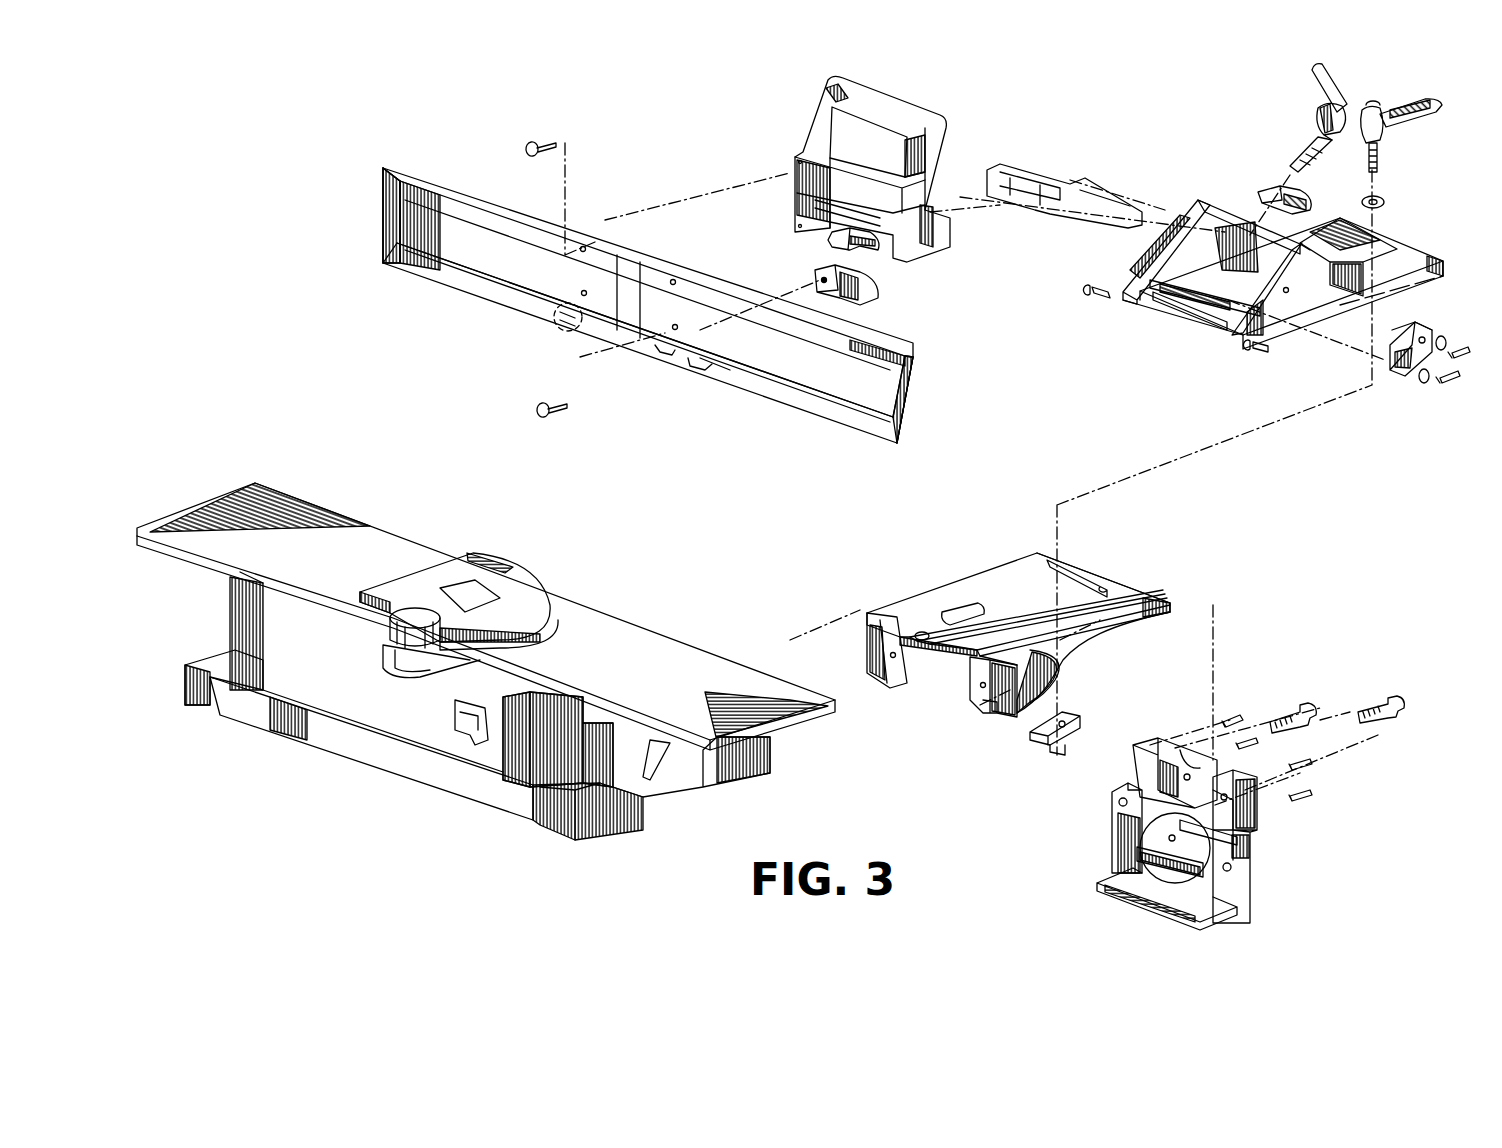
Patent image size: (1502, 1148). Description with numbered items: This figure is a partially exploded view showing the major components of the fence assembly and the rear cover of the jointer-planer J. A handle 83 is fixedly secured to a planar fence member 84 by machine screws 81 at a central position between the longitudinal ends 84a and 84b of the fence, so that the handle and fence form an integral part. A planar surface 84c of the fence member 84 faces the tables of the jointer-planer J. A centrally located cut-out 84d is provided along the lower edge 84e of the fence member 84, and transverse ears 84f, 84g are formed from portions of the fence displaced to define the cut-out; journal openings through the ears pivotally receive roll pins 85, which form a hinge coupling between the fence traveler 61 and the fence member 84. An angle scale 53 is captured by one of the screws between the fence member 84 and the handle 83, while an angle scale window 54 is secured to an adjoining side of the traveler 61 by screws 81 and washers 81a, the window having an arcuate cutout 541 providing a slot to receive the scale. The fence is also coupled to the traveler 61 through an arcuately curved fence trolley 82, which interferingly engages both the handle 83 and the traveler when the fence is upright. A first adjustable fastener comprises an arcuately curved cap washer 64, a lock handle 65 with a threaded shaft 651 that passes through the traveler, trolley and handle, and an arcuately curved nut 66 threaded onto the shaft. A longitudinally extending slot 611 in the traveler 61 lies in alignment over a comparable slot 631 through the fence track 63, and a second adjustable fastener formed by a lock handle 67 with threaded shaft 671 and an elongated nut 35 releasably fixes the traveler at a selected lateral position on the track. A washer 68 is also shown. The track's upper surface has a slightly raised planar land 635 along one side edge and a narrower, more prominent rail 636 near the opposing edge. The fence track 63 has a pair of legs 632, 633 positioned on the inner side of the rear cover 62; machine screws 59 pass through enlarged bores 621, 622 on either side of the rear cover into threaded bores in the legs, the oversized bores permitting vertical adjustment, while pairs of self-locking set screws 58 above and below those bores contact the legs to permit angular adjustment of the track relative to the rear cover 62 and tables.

The jointer-planer J is at (400, 770).
The screws 81 is at (532, 146).
The washers 81a is at (1446, 340).
The fence member 84 is at (915, 368).
The longitudinal end 84a is at (383, 213).
The longitudinal end 84b is at (910, 398).
The planar surface 84c is at (790, 338).
The cut-out 84d is at (665, 352).
The lower edge 84e is at (822, 412).
The transverse ear 84f is at (556, 312).
The transverse ear 84g is at (720, 388).
The handle 83 is at (805, 120).
The arcuately curved nut 66 is at (826, 240).
The angle scale 53 is at (872, 282).
The fence trolley 82 is at (1043, 180).
The roll pins 85 is at (1097, 283).
The lock handle 65 is at (1342, 92).
The threaded shaft 651 is at (1296, 155).
The cap washer 64 is at (1260, 190).
The lock handle 67 is at (1438, 110).
The threaded shaft 671 is at (1380, 150).
The washer 68 is at (1383, 195).
The fence traveler 61 is at (1310, 310).
The longitudinally extending slot 611 is at (1385, 240).
The angle scale window 54 is at (1400, 365).
The arcuate cutout 541 is at (1397, 338).
The fence track 63 is at (1000, 637).
The longitudinally extending slot 631 is at (1100, 588).
The planar land 635 is at (928, 602).
The rail 636 is at (1140, 588).
The leg 633 is at (865, 645).
The leg 632 is at (990, 718).
The elongated nut 35 is at (1082, 720).
The rear cover 62 is at (1190, 839).
The enlarged bore 621 is at (1250, 815).
The enlarged bore 622 is at (1135, 775).
The self-locking set screws 58 is at (1232, 714).
The machine screws 59 is at (1288, 710).